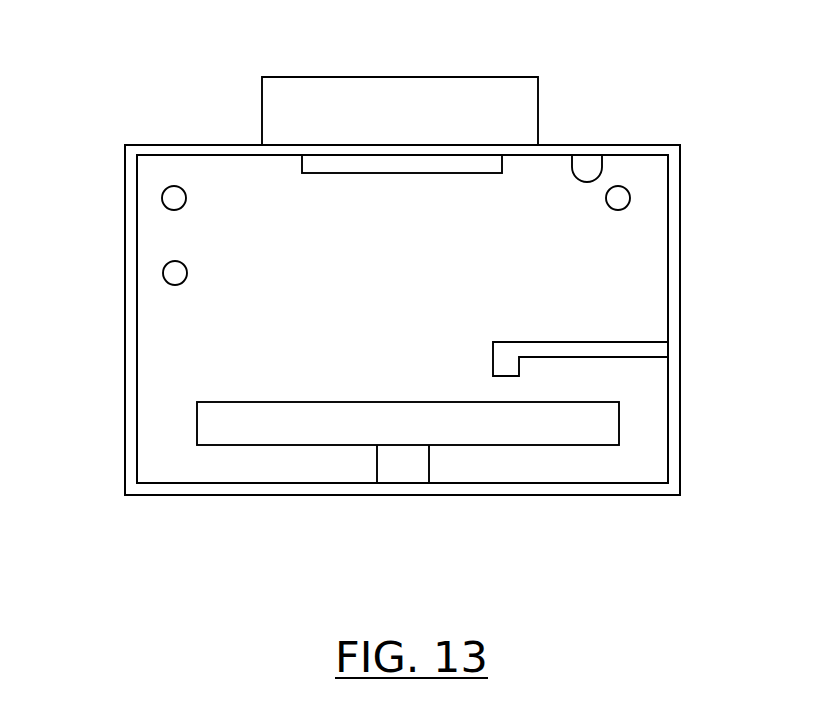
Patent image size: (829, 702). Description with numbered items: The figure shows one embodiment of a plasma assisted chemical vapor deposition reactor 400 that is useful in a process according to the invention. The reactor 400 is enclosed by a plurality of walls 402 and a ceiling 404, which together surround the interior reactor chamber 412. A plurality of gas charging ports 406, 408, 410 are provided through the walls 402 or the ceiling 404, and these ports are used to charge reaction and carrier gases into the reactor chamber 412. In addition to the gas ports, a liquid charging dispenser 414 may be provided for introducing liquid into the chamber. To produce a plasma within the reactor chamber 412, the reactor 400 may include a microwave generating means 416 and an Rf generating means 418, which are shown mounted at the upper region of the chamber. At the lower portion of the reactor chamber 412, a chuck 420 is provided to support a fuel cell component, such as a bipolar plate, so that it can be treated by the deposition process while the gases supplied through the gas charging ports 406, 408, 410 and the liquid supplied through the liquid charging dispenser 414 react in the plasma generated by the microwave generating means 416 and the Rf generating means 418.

The plasma assisted chemical vapor deposition reactor 400 is at (653, 112).
The walls 402 is at (125, 327).
The ceiling 404 is at (600, 165).
The gas charging port 406 is at (164, 190).
The gas charging port 408 is at (165, 266).
The gas charging port 410 is at (629, 189).
The reactor chamber 412 is at (583, 271).
The liquid charging dispenser 414 is at (635, 358).
The microwave generating means 416 is at (302, 168).
The Rf generating means 418 is at (262, 95).
The chuck 420 is at (505, 445).